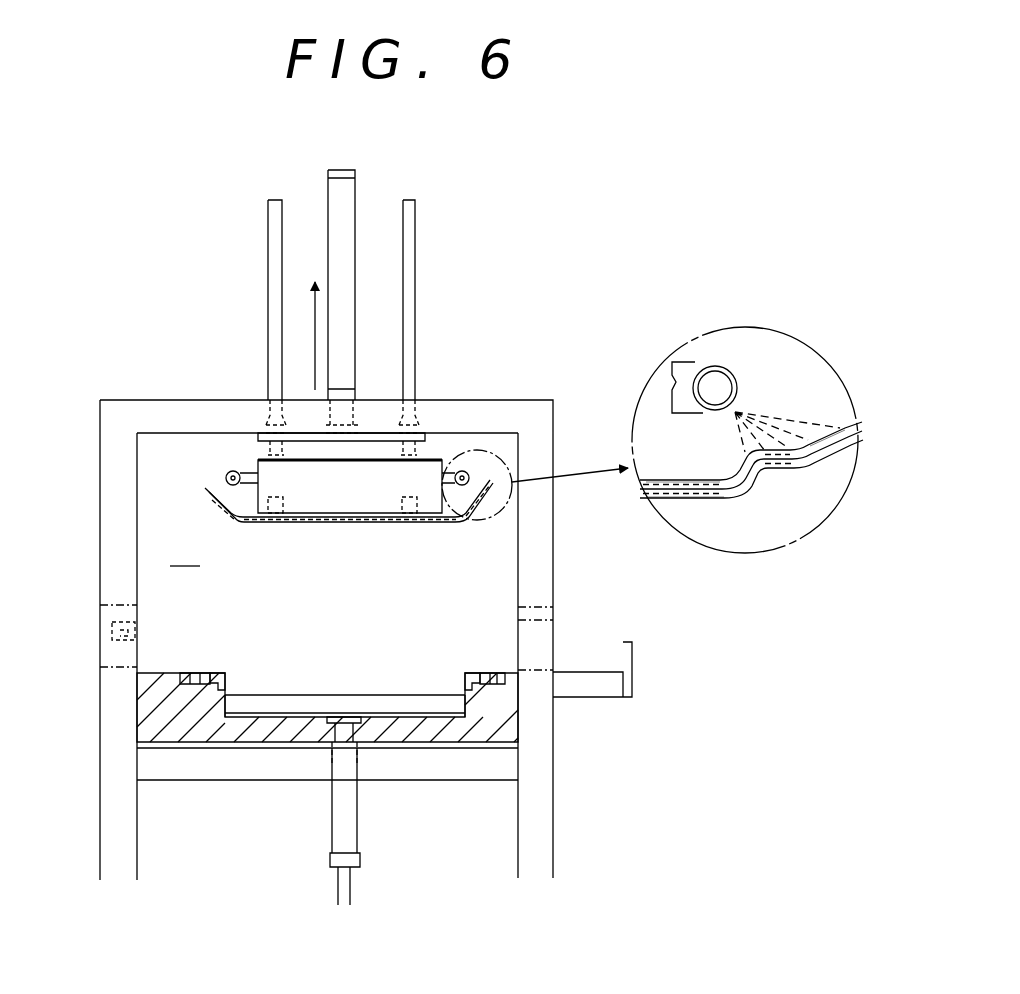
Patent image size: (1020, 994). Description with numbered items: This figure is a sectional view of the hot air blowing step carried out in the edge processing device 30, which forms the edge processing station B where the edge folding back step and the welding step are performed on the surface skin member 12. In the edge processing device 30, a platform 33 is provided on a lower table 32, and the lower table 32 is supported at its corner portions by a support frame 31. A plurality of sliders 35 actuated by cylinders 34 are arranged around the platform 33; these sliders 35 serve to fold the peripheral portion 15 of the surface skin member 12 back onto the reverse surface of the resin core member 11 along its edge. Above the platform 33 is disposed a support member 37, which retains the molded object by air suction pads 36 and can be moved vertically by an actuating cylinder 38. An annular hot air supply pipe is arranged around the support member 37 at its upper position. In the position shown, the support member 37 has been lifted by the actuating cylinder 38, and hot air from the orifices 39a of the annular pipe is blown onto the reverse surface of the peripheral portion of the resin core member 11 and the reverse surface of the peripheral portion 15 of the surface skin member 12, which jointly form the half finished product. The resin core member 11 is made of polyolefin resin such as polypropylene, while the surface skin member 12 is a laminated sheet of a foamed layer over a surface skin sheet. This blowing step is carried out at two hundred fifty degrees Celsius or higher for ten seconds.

The edge processing device 30 is at (340, 537).
The support frame 31 is at (120, 556).
The lower table 32 is at (405, 767).
The platform 33 is at (190, 727).
The cylinders 34 is at (198, 672).
The sliders 35 is at (215, 676).
The air suction pads 36 is at (275, 530).
The support member 37 is at (334, 486).
The actuating cylinder 38 is at (343, 253).
The orifices 39a is at (736, 410).
The resin core member 11 is at (682, 480).
The surface skin member 12 is at (755, 488).
The peripheral portion 15 is at (848, 450).
The edge processing station B is at (185, 549).